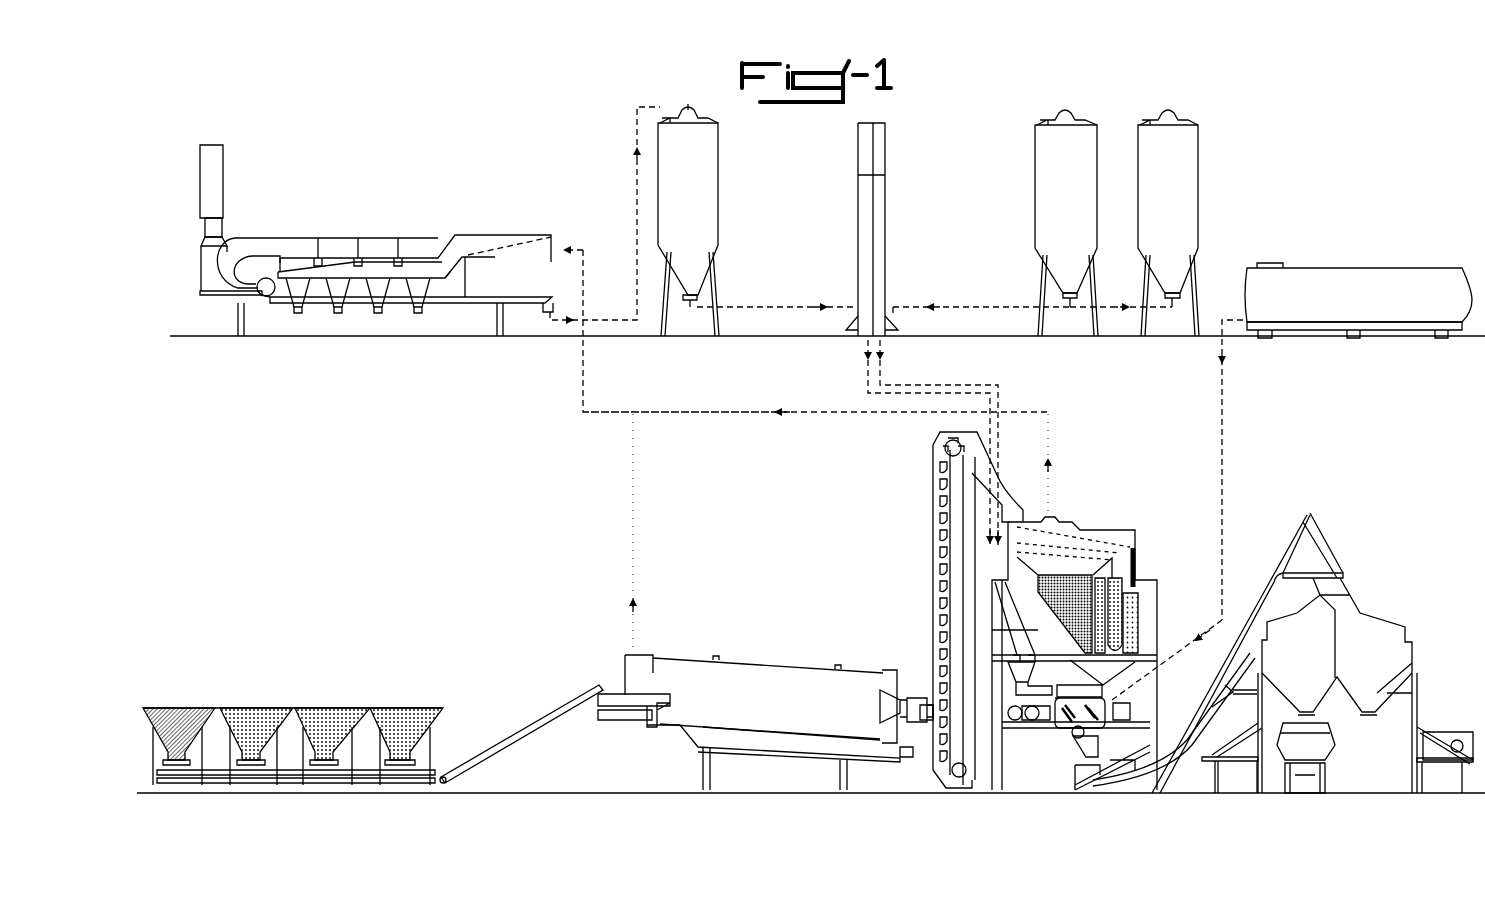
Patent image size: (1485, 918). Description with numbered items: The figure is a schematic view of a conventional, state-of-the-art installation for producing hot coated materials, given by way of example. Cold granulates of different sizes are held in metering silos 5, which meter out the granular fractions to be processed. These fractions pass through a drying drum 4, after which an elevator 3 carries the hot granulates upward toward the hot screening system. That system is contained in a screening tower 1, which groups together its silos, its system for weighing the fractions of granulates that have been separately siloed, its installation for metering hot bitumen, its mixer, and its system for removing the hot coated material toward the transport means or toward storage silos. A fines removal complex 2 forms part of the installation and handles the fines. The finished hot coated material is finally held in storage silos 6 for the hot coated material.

The screening tower 1 is at (1090, 531).
The fines removal complex 2 is at (370, 240).
The elevator 3 is at (932, 527).
The drying drum 4 is at (820, 670).
The metering silos 5 is at (307, 708).
The storage silos 6 is at (1380, 617).